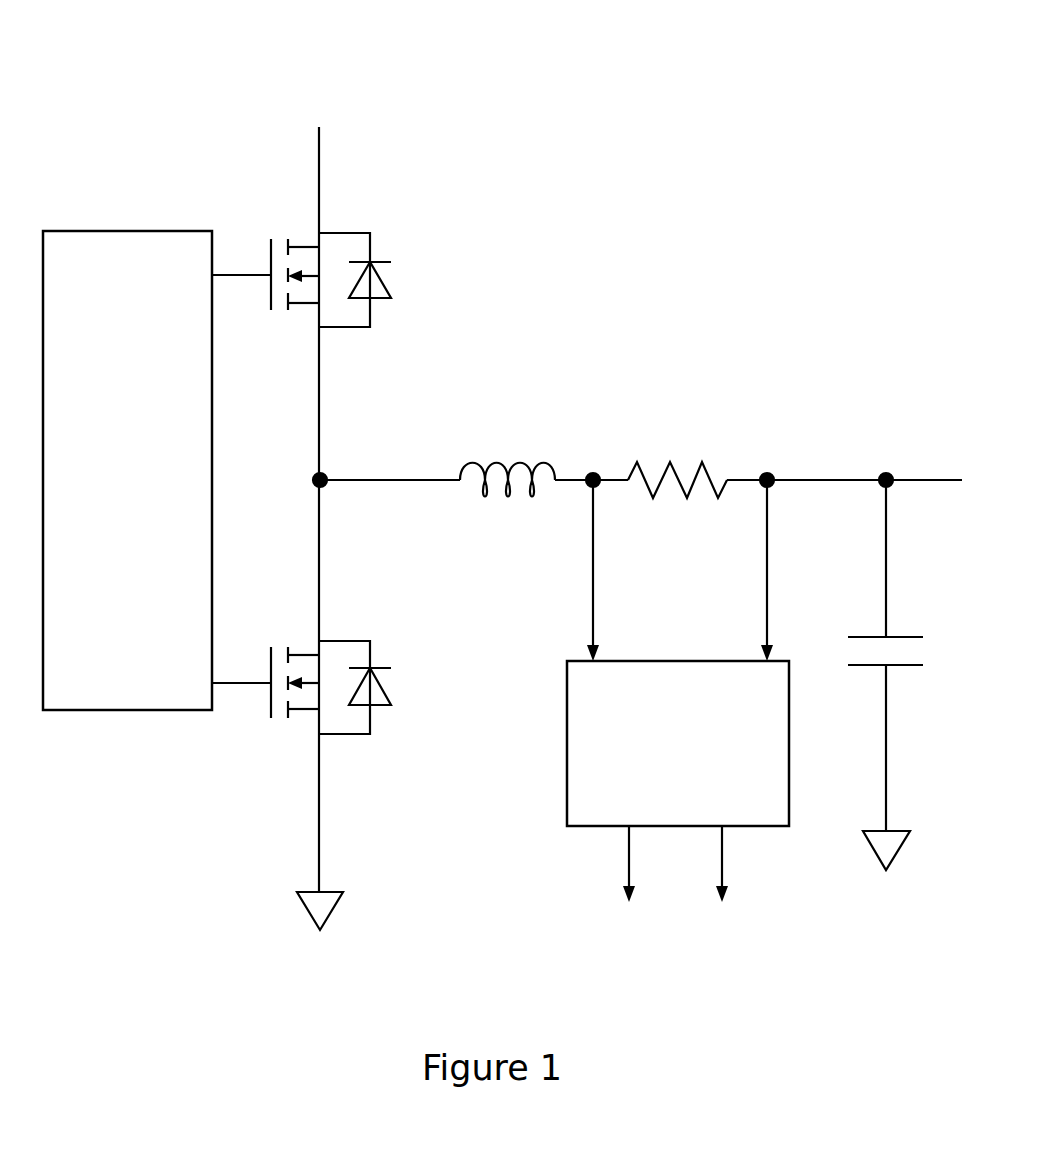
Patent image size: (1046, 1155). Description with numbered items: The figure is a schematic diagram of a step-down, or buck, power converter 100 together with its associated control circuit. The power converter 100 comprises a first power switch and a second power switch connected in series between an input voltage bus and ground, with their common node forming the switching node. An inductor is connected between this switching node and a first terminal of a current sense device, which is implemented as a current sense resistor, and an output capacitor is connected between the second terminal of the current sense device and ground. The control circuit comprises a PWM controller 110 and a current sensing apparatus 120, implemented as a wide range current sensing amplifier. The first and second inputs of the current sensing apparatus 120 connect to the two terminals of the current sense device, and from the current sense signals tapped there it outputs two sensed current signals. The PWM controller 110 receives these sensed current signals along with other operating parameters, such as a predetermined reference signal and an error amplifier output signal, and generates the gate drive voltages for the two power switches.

The power converter 100 is at (792, 64).
The PWM controller 110 is at (104, 538).
The current sensing apparatus 120 is at (655, 793).